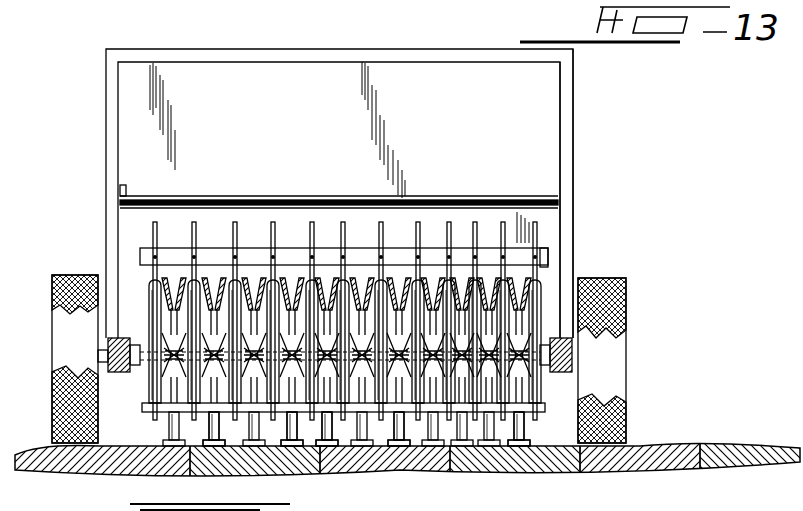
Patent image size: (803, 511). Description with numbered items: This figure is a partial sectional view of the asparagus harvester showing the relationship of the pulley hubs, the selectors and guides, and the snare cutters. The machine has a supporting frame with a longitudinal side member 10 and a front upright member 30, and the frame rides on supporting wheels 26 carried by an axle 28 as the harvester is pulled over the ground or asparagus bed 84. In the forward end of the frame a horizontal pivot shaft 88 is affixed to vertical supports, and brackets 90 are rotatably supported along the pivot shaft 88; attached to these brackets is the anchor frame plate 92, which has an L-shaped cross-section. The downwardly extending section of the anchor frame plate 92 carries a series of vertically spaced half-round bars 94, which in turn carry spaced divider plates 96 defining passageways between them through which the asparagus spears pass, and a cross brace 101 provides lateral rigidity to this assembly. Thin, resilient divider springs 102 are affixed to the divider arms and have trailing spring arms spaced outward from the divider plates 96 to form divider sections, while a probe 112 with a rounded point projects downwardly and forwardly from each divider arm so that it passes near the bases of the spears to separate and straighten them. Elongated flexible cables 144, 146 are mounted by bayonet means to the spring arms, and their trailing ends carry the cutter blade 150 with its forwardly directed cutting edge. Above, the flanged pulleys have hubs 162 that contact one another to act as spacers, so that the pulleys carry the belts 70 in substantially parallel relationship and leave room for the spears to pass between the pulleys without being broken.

The front upright member 30 is at (108, 80).
The horizontal pivot shaft 88 is at (573, 168).
The bracket 90 is at (122, 188).
The anchor frame plate 92 is at (551, 227).
The half-round bar 94 is at (152, 232).
The divider plate 96 is at (140, 300).
The cross brace 101 is at (290, 246).
The divider spring 102 is at (165, 412).
The longitudinal side member 10 is at (110, 372).
The axle 28 is at (97, 363).
The supporting wheel 26 is at (65, 308).
The belt 70 is at (548, 302).
The cutter blade 150 is at (212, 448).
The flexible cable 144 is at (299, 445).
The flexible cable 146 is at (332, 430).
The pulley hub 162 is at (405, 447).
The probe 112 is at (535, 445).
The asparagus bed 84 is at (453, 462).